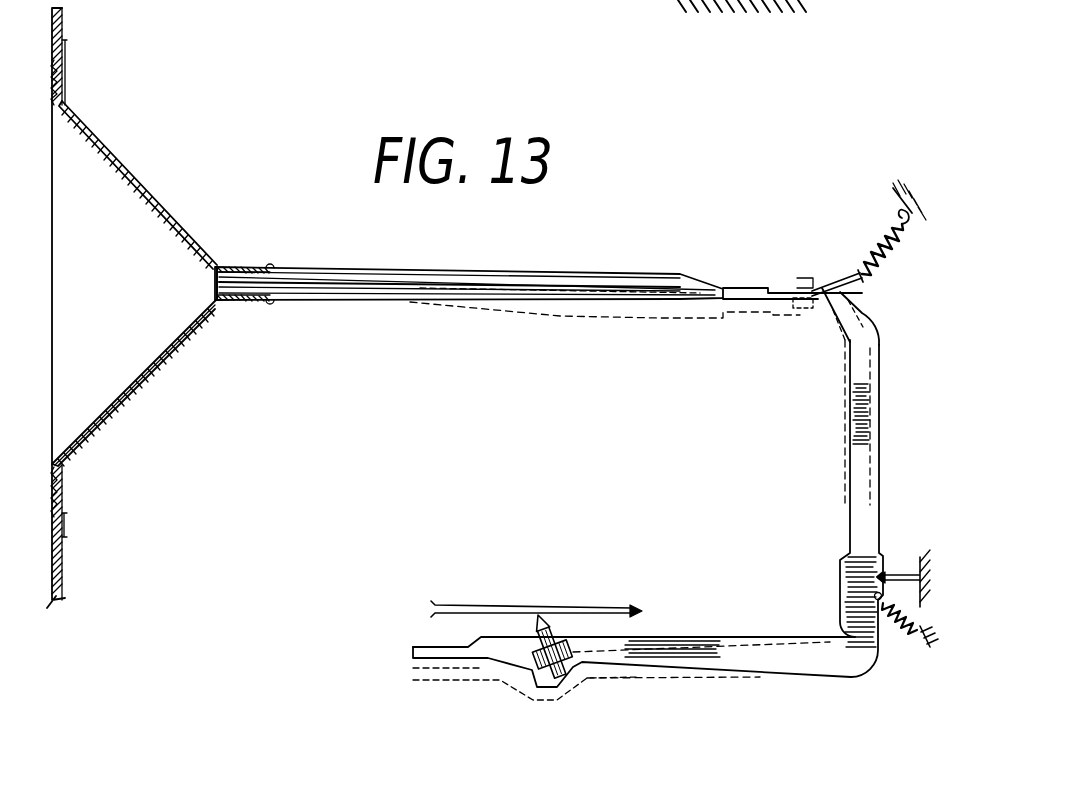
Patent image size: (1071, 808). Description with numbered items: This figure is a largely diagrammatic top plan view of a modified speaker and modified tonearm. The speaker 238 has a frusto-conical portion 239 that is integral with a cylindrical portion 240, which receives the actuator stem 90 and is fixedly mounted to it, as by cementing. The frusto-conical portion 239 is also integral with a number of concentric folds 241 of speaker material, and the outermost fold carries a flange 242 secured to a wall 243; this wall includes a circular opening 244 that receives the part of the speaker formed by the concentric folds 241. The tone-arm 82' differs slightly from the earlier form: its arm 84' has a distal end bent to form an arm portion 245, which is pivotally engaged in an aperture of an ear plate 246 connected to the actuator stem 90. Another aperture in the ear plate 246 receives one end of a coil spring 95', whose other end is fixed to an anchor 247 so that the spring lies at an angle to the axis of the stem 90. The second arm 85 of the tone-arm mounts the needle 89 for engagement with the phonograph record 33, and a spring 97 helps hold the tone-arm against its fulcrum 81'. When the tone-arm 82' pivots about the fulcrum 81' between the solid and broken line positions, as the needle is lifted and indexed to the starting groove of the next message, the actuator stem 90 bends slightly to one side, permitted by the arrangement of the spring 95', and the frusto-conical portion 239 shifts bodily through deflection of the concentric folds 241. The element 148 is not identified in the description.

The flange 242 is at (66, 44).
The concentric folds 241 is at (66, 88).
The cylindrical portion 240 is at (241, 267).
The actuator stem 90 is at (352, 272).
The ear plate 246 is at (778, 287).
The anchor 247 is at (893, 197).
The coil spring 95' is at (851, 244).
The arm portion 245 is at (840, 323).
The arm 84' is at (825, 508).
The fulcrum 81' is at (903, 553).
The phonograph record 33 is at (471, 603).
The needle 89 is at (540, 614).
The channel 148 is at (415, 654).
The tone-arm 82' is at (701, 611).
The second arm 85 is at (761, 667).
The spring 97 is at (910, 638).
The frusto-conical portion 239 is at (173, 350).
The speaker 238 is at (143, 378).
The circular opening 244 is at (63, 510).
The wall 243 is at (60, 563).